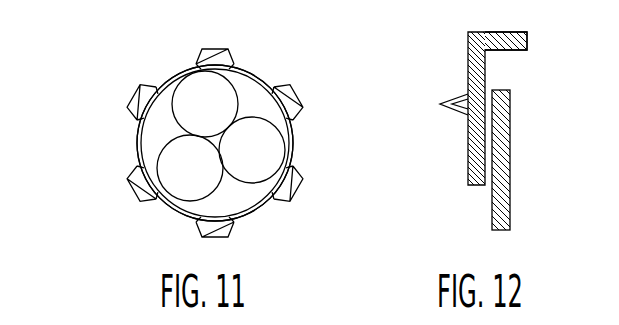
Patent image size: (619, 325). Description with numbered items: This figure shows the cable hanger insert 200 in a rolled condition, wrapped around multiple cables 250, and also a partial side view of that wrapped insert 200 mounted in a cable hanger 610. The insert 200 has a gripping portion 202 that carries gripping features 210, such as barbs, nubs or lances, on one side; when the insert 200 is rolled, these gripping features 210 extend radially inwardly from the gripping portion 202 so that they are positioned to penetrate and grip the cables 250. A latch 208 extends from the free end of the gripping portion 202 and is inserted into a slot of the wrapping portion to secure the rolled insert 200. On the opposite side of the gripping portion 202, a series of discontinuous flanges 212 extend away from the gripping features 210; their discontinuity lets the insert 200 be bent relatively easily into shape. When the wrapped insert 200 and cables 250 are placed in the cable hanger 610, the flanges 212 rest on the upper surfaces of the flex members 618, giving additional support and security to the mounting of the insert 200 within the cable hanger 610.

In FIG. 11, the cable hanger insert 200 is at (128, 168).
In FIG. 11, the latch 208 is at (147, 136).
In FIG. 11, the gripping features 210 is at (160, 93).
In FIG. 12, the gripping features 210 is at (466, 112).
In FIG. 11, the discontinuous flanges 212 is at (136, 101).
In FIG. 12, the discontinuous flanges 212 is at (527, 42).
In FIG. 11, the cables 250 is at (245, 110).
In FIG. 12, the gripping portion 202 is at (474, 75).
In FIG. 12, the cable hanger 610 is at (519, 113).
In FIG. 12, the flex members 618 is at (500, 193).